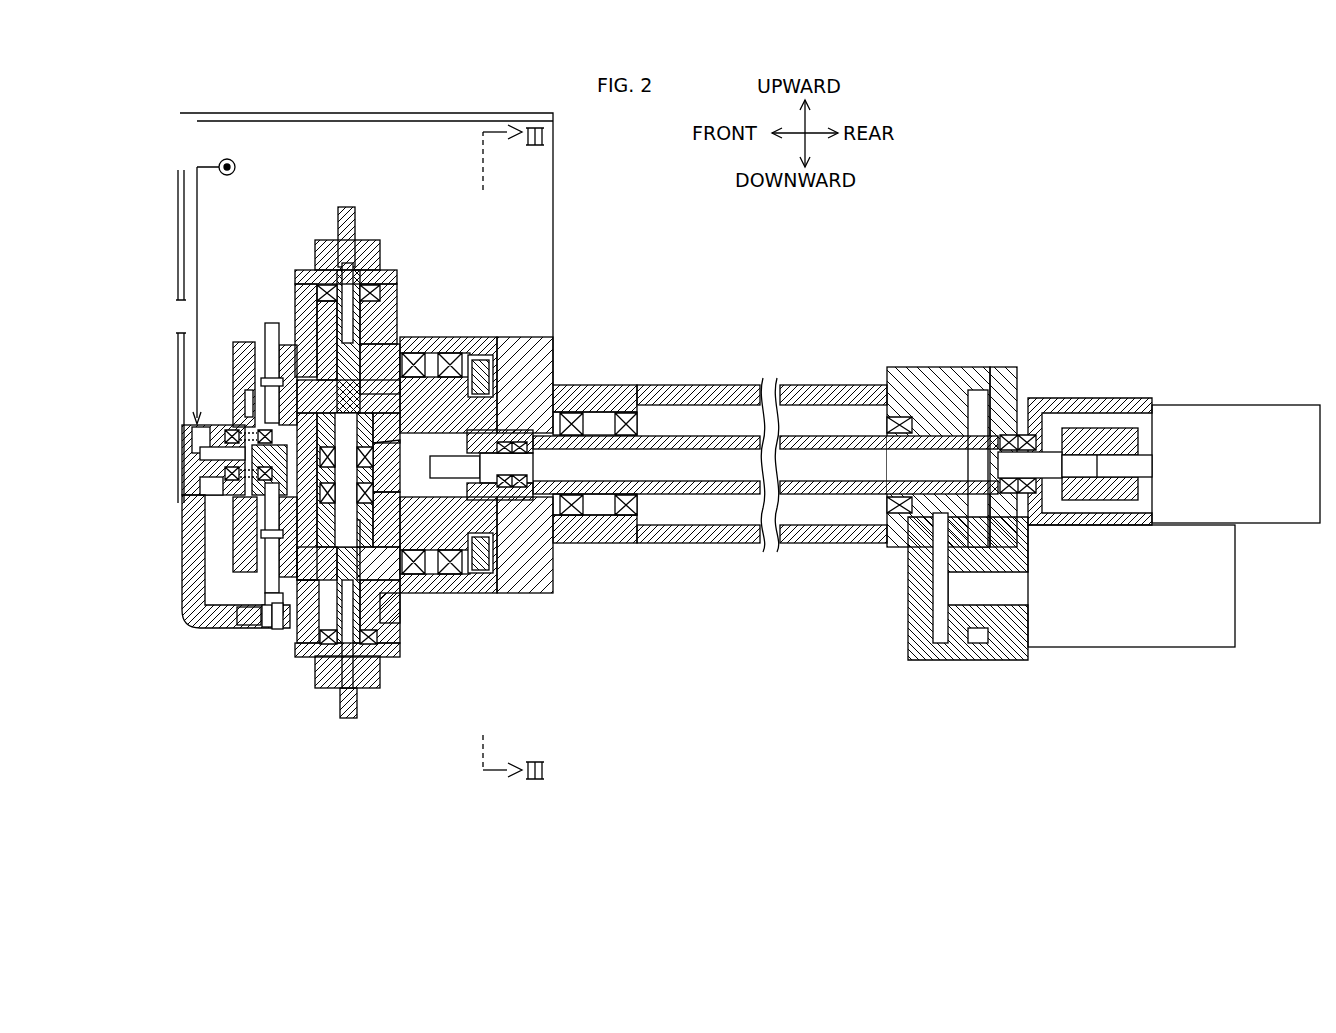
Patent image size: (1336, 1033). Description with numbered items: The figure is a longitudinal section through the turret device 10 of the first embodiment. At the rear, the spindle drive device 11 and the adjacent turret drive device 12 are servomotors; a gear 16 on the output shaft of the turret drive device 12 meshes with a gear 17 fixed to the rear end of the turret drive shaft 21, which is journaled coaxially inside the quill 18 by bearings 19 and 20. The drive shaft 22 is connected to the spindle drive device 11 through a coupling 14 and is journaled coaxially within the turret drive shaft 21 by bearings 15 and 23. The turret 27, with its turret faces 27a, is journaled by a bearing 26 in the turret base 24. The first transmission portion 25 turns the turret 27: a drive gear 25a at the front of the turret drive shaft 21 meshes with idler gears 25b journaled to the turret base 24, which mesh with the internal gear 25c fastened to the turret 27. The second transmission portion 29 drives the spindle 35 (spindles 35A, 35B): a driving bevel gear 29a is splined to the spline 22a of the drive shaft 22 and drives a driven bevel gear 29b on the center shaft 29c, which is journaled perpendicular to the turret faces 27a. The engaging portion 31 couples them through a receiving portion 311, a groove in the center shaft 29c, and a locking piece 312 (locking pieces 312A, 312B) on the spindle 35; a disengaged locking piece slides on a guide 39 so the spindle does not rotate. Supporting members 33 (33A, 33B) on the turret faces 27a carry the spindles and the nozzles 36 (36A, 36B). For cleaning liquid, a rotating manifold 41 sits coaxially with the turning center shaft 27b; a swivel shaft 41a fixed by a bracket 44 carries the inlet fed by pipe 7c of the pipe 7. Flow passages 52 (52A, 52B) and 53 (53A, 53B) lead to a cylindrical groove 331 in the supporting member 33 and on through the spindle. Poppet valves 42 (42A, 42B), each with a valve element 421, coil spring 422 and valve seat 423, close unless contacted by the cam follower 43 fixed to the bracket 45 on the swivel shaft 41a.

The turret device 10 is at (957, 210).
The spindle drive device 11 is at (1220, 425).
The turret drive device 12 is at (1138, 620).
The coupling 14 is at (1100, 428).
The bearing 15 is at (1035, 398).
The gear 16 is at (965, 660).
The gear 17 is at (1000, 367).
The quill 18 is at (748, 385).
The bearing 19 is at (917, 367).
The bearing 20 is at (635, 527).
The turret drive shaft 21 is at (812, 437).
The drive shaft 22 is at (712, 470).
The spline 22a is at (505, 500).
The bearing 23 is at (562, 545).
The turret base 24 is at (467, 573).
The first transmission portion 25 is at (662, 322).
The drive gear 25a is at (527, 417).
The idler gear 25b is at (470, 410).
The internal gear 25c is at (480, 397).
The bearing 26 is at (450, 593).
The turret 27 is at (503, 592).
The turret face 27a is at (400, 600).
The turning center shaft 27b is at (525, 366).
The second transmission portion 29 is at (638, 237).
The driving bevel gear 29a is at (480, 377).
The driven bevel gear 29b is at (460, 353).
The center shaft 29c is at (427, 337).
The engaging portion 31 is at (606, 650).
The receiving portion 311 is at (395, 595).
The locking piece 312 is at (386, 428).
The locking piece 312A is at (395, 582).
The locking piece 312B is at (400, 340).
The supporting member 33 is at (411, 470).
The supporting member 33A is at (400, 650).
The supporting member 33B is at (400, 335).
The cylindrical groove 331 is at (306, 645).
The spindle 35 is at (365, 487).
The spindle 35A is at (380, 690).
The spindle 35B is at (365, 287).
The nozzle 36 is at (329, 459).
The nozzle 36A is at (345, 700).
The nozzle 36B is at (340, 215).
The guide 39 is at (277, 312).
The rotating manifold 41 is at (228, 340).
The swivel shaft 41a is at (182, 447).
The poppet valve 42 is at (209, 454).
The poppet valve 42A is at (195, 702).
The poppet valve 42B is at (269, 316).
The valve element 421 is at (252, 626).
The coil spring 422 is at (266, 628).
The valve seat 423 is at (276, 630).
The cam follower 43 is at (283, 640).
The bracket 44 is at (358, 112).
The bracket 45 is at (183, 605).
The flow passage 52 is at (186, 471).
The flow passage 52A is at (237, 510).
The flow passage 52B is at (240, 397).
The flow passage 53 is at (234, 480).
The flow passage 53A is at (286, 618).
The flow passage 53B is at (300, 278).
The pipe 7 is at (155, 356).
The pipe 7c is at (198, 215).